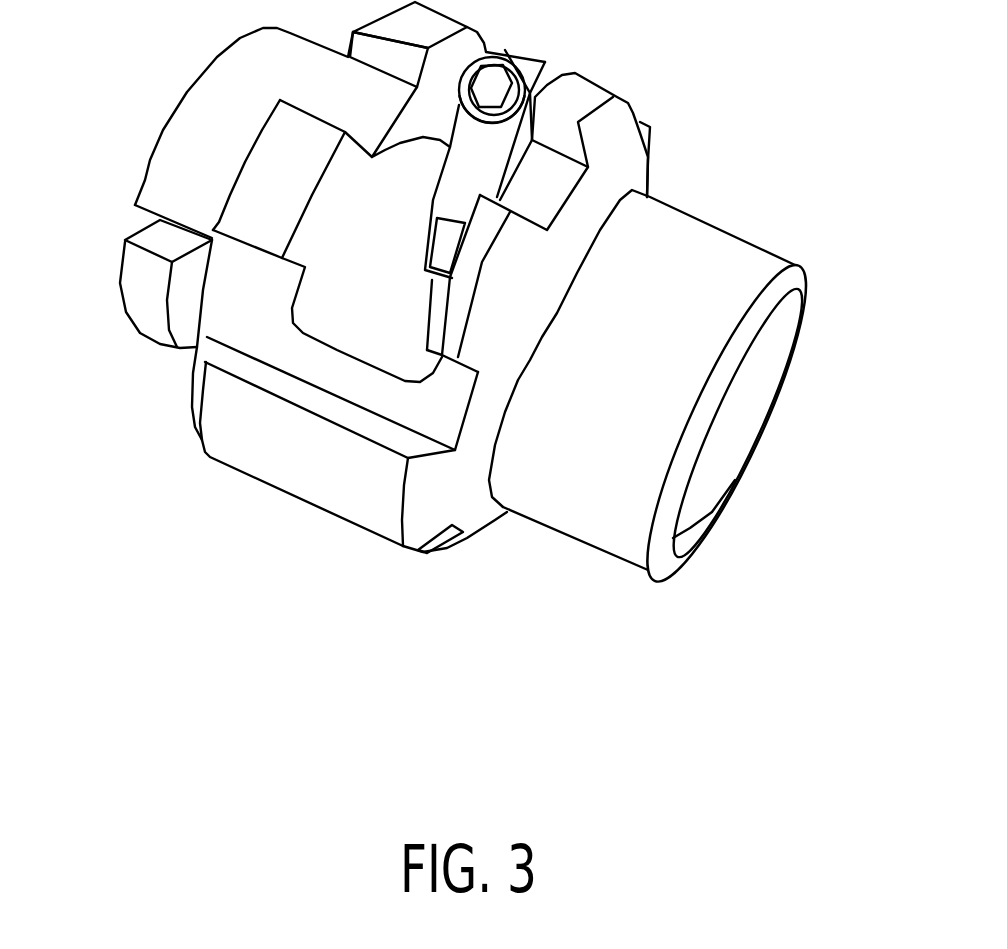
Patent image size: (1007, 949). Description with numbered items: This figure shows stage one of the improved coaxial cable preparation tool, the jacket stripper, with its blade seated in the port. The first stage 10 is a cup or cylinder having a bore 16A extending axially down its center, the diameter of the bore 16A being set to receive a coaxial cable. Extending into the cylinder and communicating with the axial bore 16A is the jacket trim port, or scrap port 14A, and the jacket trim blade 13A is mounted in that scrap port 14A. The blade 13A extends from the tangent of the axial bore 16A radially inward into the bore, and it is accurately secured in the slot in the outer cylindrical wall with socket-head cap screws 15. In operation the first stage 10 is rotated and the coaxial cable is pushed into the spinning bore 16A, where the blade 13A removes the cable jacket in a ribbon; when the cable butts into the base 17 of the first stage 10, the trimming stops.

The first stage 10 is at (642, 461).
The blade 13A is at (504, 214).
The scrap port 14A is at (295, 402).
The socket-head cap screws 15 is at (546, 62).
The bore 16A is at (751, 423).
The base 17 is at (358, 277).